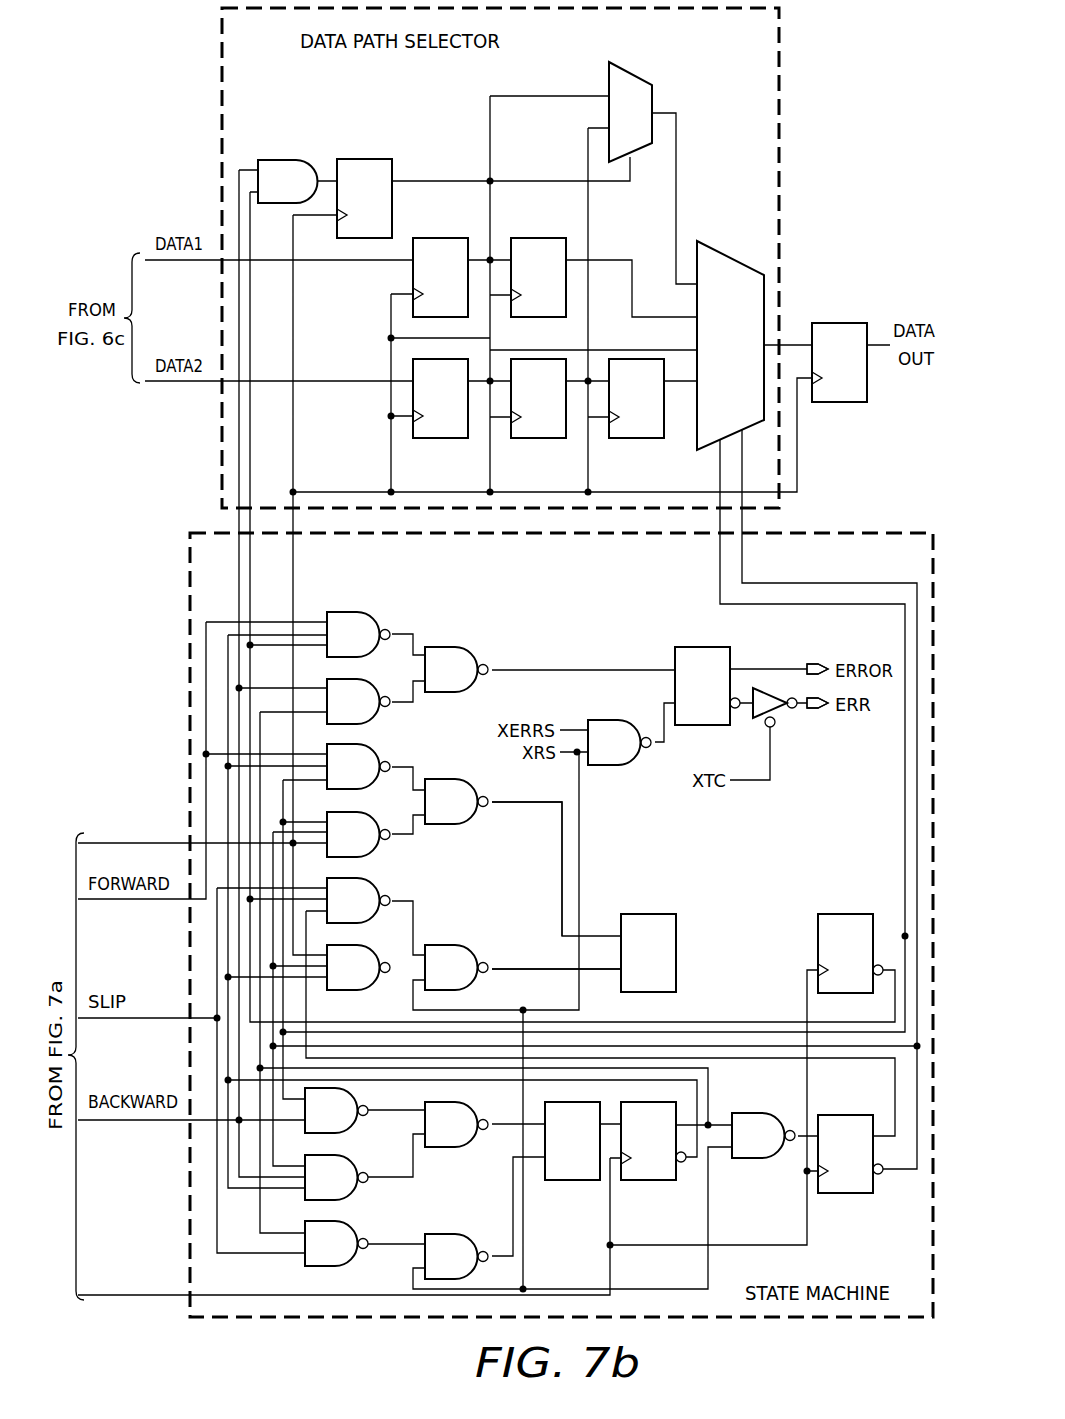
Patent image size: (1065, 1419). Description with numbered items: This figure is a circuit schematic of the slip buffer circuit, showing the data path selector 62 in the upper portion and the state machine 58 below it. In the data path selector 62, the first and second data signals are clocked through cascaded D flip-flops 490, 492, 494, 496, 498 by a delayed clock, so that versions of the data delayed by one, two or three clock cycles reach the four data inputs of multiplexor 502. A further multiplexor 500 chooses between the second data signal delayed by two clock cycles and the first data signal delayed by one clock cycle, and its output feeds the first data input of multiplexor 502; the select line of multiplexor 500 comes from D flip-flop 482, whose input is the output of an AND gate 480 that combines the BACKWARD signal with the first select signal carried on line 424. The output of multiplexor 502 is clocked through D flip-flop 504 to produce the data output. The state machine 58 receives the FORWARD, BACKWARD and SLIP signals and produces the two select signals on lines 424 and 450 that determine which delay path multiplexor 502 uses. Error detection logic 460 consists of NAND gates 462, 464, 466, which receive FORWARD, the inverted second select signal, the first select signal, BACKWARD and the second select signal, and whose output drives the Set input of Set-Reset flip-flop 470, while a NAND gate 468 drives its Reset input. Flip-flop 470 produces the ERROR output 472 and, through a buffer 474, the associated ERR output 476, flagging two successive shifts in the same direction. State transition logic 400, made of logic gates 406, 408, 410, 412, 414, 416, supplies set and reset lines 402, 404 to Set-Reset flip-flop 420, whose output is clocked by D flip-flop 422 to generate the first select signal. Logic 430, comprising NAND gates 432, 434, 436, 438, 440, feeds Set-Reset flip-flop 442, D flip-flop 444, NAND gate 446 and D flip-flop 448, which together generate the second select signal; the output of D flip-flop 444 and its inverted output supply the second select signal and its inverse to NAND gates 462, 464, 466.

The data path selector 62 is at (779, 165).
The state machine 58 is at (900, 533).
The AND gate 480 is at (268, 160).
The D flip-flop 482 is at (358, 159).
The D flip-flop 490 is at (440, 238).
The D flip-flop 492 is at (538, 238).
The D flip-flop 494 is at (440, 438).
The D flip-flop 496 is at (538, 438).
The D flip-flop 498 is at (636, 438).
The multiplexor 500 is at (636, 76).
The multiplexor 502 is at (727, 256).
The D flip-flop 504 is at (838, 402).
The D flip-flop 424 is at (720, 576).
The select signal line S0 450 is at (742, 570).
The error detection logic 460 is at (405, 618).
The NAND gate 462 is at (345, 612).
The NAND gate 464 is at (375, 724).
The NAND gate 466 is at (470, 648).
The state transition logic 400 is at (465, 724).
The set signal line 402 is at (556, 828).
The reset signal line 404 is at (530, 969).
The logic gate 406 is at (372, 748).
The logic gate 408 is at (372, 856).
The logic gate 410 is at (372, 880).
The logic gate 412 is at (340, 990).
The logic gate 414 is at (470, 781).
The logic gate 416 is at (455, 945).
The Set-Reset flip-flop 420 is at (645, 914).
The D flip-flop 422 is at (846, 914).
The NAND gate 468 is at (608, 765).
The Set-Reset flip-flop 470 is at (688, 647).
The ERROR output 472 is at (814, 660).
The tri-state buffer 474 is at (758, 716).
The ERR output 476 is at (814, 708).
The state logic 430 is at (292, 1265).
The NAND gate 432 is at (350, 1090).
The NAND gate 434 is at (350, 1198).
The NAND gate 436 is at (350, 1224).
The NAND gate 438 is at (448, 1147).
The NAND gate 440 is at (460, 1234).
The Set-Reset flip-flop 442 is at (572, 1180).
The D flip-flop 444 is at (648, 1180).
The NAND gate 446 is at (748, 1113).
The D flip-flop 448 is at (845, 1193).